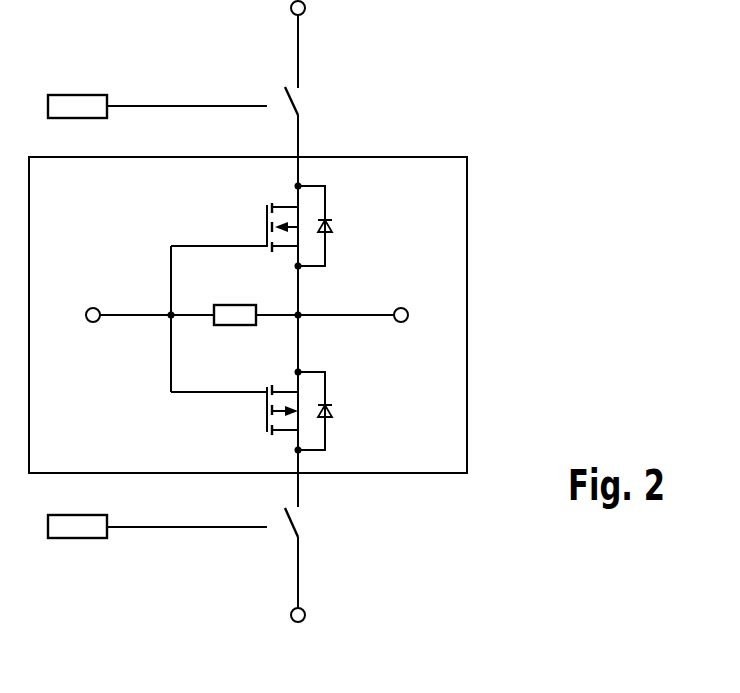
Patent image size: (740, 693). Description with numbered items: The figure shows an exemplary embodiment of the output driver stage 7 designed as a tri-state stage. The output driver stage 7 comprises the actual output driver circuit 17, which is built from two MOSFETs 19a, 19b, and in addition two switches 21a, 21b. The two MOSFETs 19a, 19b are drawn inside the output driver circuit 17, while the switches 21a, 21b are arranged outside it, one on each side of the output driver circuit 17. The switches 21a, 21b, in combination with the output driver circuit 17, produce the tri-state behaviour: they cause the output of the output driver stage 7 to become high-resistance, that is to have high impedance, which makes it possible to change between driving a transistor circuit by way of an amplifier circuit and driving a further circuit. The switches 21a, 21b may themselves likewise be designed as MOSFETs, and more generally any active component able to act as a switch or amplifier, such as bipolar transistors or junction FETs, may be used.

The output driver stage 7 is at (536, 124).
The output driver circuit 17 is at (467, 262).
The MOSFET 19a is at (360, 222).
The MOSFET 19b is at (360, 402).
The switch 21a is at (336, 100).
The switch 21b is at (336, 528).